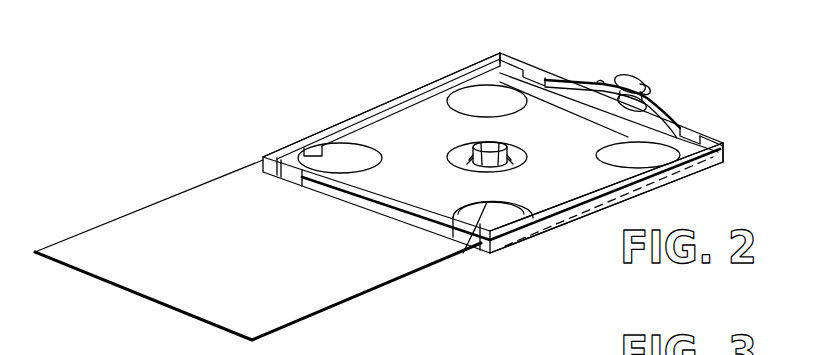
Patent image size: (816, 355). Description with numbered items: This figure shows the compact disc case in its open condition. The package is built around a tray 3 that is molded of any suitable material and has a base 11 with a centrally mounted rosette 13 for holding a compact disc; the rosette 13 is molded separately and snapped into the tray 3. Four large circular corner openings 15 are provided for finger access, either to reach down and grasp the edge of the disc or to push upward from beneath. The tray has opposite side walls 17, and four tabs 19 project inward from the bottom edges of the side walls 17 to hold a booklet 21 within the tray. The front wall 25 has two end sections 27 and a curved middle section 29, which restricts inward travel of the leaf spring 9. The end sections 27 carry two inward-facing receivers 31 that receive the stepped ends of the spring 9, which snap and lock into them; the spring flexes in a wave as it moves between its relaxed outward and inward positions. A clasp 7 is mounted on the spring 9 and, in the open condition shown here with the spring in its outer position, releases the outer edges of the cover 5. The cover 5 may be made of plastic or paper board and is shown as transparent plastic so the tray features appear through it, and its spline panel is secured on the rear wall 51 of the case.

The tray 3 is at (585, 226).
The cover 5 is at (165, 311).
The clasp 7 is at (623, 78).
The leaf spring 9 is at (603, 80).
The base 11 is at (428, 191).
The rosette 13 is at (523, 147).
The corner openings 15 is at (682, 172).
The side walls 17 is at (417, 96).
The tabs 19 is at (313, 150).
The booklet 21 is at (376, 160).
The front wall 25 is at (720, 129).
The end sections 27 is at (506, 62).
The curved middle section 29 is at (583, 94).
The receivers 31 is at (685, 127).
The rear wall 51 is at (479, 262).